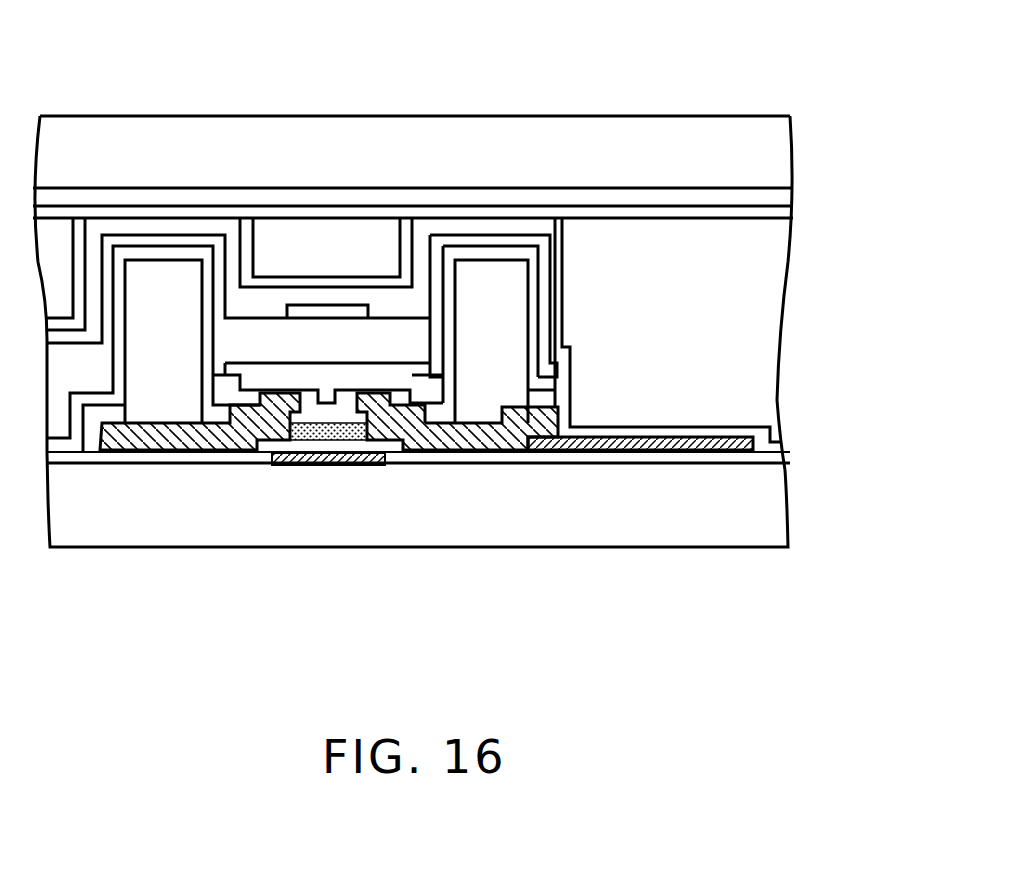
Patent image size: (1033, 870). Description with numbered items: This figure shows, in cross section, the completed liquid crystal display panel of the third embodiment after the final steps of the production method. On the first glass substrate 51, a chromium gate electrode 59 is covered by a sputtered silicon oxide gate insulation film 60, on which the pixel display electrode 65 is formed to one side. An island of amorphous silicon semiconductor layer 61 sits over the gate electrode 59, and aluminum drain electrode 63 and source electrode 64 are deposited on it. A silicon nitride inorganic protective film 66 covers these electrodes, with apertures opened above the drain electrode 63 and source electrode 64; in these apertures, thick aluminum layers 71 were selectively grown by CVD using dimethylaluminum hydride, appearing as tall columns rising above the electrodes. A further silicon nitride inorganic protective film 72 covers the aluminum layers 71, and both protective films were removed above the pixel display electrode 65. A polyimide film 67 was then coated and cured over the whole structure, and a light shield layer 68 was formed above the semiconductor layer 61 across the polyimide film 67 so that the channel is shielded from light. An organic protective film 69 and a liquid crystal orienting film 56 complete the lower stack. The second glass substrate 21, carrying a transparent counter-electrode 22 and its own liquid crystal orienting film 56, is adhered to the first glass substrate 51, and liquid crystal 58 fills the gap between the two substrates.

The second glass substrate 21 is at (690, 130).
The transparent counter-electrode 22 is at (637, 195).
The first glass substrate 51 is at (605, 540).
The liquid crystal orienting film 56 is at (280, 285).
The liquid crystal 58 is at (380, 232).
The gate electrode 59 is at (353, 458).
The gate insulation film 60 is at (547, 465).
The semiconductor layer 61 is at (307, 443).
The drain electrode 63 is at (188, 445).
The source electrode 64 is at (465, 445).
The pixel display electrode 65 is at (665, 442).
The inorganic protective film 66 is at (407, 397).
The polyimide film 67 is at (460, 242).
The light shield layer 68 is at (332, 306).
The organic protective film 69 is at (182, 225).
The aluminum layer 71 is at (148, 398).
The inorganic protective film 72 is at (505, 253).